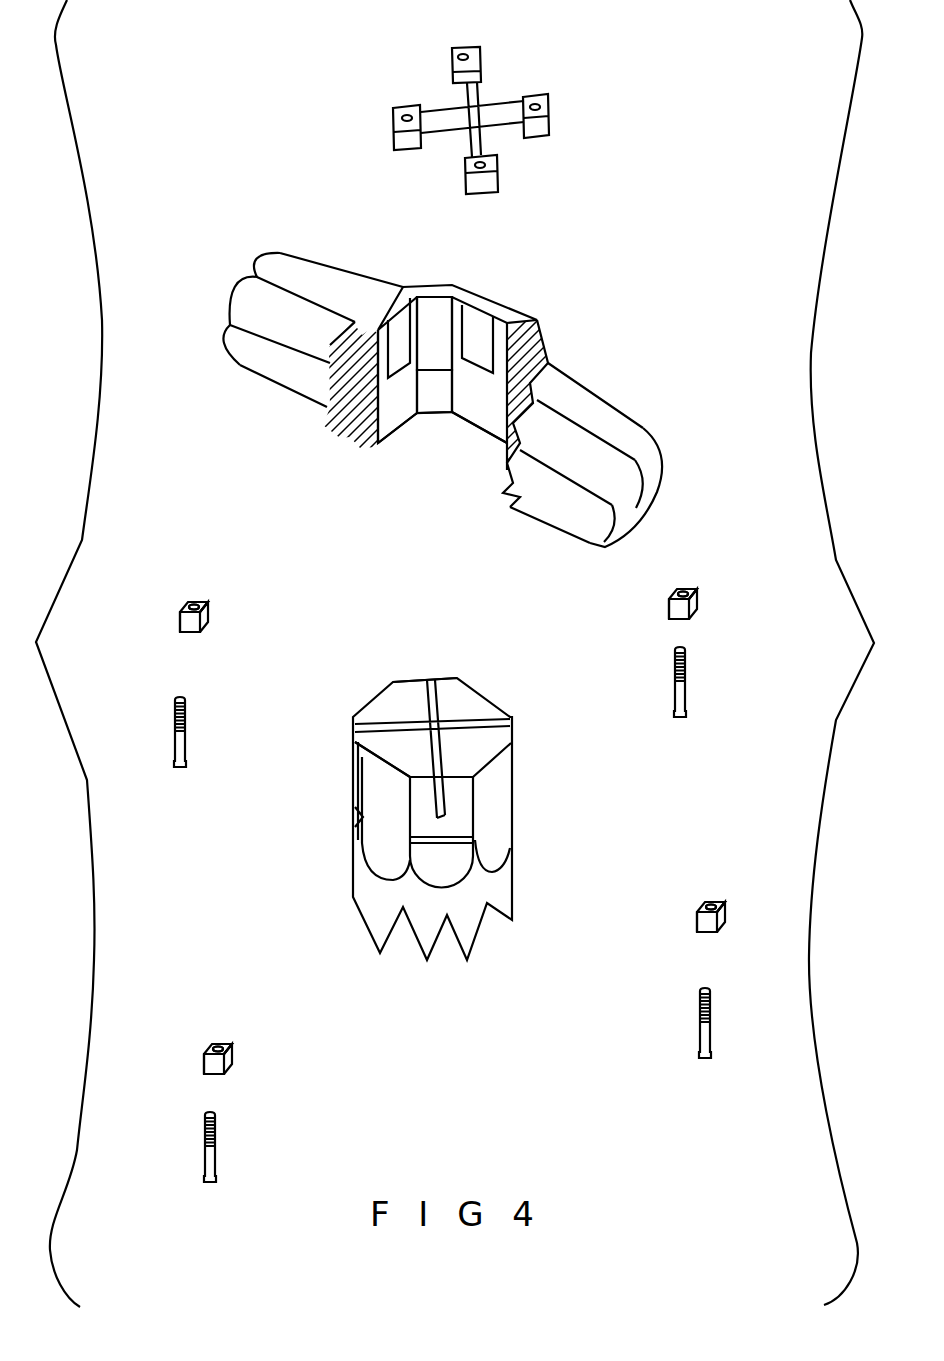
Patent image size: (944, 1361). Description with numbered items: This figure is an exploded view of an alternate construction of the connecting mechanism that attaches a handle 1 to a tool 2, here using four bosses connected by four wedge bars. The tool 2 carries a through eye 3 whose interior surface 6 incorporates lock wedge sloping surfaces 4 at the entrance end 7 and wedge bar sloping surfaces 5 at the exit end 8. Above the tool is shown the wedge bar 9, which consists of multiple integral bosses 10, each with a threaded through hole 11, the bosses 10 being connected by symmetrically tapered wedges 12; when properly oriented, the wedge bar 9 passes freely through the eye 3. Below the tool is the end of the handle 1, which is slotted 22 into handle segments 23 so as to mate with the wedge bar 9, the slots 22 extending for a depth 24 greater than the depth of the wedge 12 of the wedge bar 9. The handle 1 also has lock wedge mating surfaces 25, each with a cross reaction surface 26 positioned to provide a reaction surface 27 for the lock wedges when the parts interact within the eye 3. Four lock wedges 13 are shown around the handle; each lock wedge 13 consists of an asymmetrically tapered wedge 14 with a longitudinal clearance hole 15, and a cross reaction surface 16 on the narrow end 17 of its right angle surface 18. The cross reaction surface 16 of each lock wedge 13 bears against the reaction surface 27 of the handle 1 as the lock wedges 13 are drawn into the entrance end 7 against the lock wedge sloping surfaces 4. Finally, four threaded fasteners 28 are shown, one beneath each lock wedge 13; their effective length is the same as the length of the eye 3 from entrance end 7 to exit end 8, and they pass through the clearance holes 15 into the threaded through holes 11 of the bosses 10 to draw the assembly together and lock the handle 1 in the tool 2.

The handle 1 is at (427, 816).
The tool 2 is at (610, 405).
The through eye 3 is at (447, 427).
The lock wedge sloping surfaces 4 is at (437, 393).
The wedge bar sloping surfaces 5 is at (397, 327).
The interior surface 6 is at (480, 397).
The entrance end 7 is at (403, 475).
The exit end 8 is at (418, 402).
The wedge bar 9 is at (468, 117).
The bosses 10 is at (453, 47).
The threaded through hole 11 is at (480, 48).
The symmetrically tapered wedges 12 is at (432, 105).
The lock wedge 13 is at (187, 632).
The asymmetrically tapered wedge 14 is at (178, 617).
The longitudinal clearance hole 15 is at (188, 598).
The cross reaction surface 16 is at (210, 610).
The narrow end 17 is at (200, 592).
The right angle surface 18 is at (200, 630).
The slots 22 is at (430, 675).
The handle segments 23 is at (408, 703).
The depth 24 is at (350, 787).
The lock wedge mating surfaces 25 is at (447, 870).
The cross reaction surface 26 is at (520, 817).
The reaction surface 27 is at (513, 803).
The threaded fasteners 28 is at (173, 738).